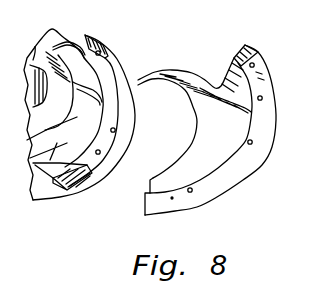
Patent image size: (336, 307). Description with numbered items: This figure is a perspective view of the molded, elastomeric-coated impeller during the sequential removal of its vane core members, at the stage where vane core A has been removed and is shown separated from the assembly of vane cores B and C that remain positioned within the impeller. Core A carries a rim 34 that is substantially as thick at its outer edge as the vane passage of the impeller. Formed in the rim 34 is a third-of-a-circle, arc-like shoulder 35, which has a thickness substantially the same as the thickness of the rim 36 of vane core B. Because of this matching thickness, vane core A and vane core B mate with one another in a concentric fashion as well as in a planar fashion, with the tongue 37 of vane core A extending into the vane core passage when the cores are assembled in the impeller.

The rim 34 is at (268, 152).
The shoulder 35 is at (229, 63).
The rim 36 is at (131, 133).
The tongue 37 is at (163, 73).